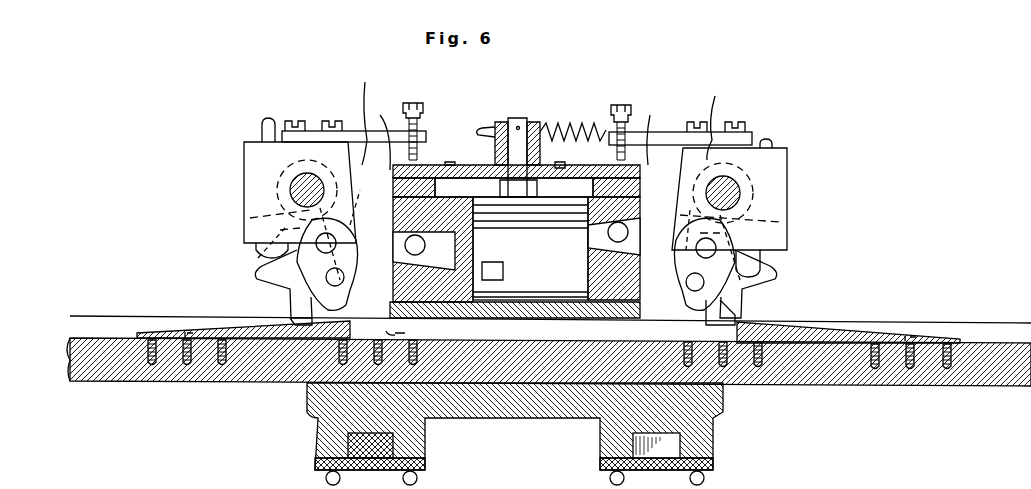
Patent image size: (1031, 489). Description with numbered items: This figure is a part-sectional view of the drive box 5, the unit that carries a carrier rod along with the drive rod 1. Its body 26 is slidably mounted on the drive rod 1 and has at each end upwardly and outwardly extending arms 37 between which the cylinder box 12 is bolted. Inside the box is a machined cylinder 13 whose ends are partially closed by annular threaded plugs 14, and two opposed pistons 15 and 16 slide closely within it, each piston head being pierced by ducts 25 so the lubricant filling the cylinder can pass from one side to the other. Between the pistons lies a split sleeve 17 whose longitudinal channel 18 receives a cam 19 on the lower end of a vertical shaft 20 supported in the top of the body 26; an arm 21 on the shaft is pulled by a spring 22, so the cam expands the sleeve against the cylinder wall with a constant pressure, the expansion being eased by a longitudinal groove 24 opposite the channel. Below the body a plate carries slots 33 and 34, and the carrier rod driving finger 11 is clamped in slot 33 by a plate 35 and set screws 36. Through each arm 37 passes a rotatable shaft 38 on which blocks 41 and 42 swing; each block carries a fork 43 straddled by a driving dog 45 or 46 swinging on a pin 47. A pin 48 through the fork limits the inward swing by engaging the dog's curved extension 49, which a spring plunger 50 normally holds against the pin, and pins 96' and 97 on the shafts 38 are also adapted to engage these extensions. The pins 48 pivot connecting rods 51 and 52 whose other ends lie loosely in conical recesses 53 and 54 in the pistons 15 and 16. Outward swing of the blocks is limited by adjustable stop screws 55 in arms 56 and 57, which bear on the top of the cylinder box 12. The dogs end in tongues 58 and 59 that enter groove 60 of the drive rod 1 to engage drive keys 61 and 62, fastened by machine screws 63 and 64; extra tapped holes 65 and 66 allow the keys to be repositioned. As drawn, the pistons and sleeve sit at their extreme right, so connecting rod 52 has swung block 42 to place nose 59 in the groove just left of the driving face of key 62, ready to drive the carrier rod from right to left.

The drive rod 1 is at (83, 381).
The drive box 5 is at (471, 152).
The carrier rod driving finger 11 is at (395, 445).
The cylinder box 12 is at (437, 167).
The cylinder 13 is at (525, 270).
The annular threaded plugs 14 is at (519, 134).
The piston 15 is at (410, 205).
The piston 16 is at (628, 196).
The sleeve 17 is at (566, 215).
The channel 18 is at (490, 200).
The cam 19 is at (510, 205).
The shaft 20 is at (519, 125).
The arm 21 is at (487, 128).
The spring 22 is at (575, 124).
The longitudinal groove 24 is at (545, 215).
The ducts 25 is at (578, 160).
The body 26 is at (330, 418).
The slot 33 is at (345, 448).
The slot 34 is at (636, 448).
The plate 35 is at (318, 462).
The set screws 36 is at (706, 477).
The arms 37 is at (547, 115).
The rotatable shaft 38 is at (292, 190).
The block 41 is at (256, 152).
The block 42 is at (780, 160).
The fork 43 is at (398, 306).
The driving dog 45 is at (260, 268).
The driving dog 46 is at (772, 290).
The pin 47 is at (325, 283).
The pin 48 is at (345, 276).
The curved extensions 49 is at (352, 236).
The spring plunger 50 is at (256, 250).
The connecting rod 51 is at (338, 250).
The connecting rod 52 is at (628, 234).
The conical recess 53 is at (416, 231).
The conical recess 54 is at (632, 220).
The adjustable stop screws 55 is at (412, 103).
The arm 56 is at (352, 134).
The arm 57 is at (673, 137).
The tongue 58 is at (294, 307).
The tongue 59 is at (706, 322).
The groove 60 is at (114, 320).
The drive key 61 is at (226, 331).
The drive key 62 is at (858, 330).
The machine screws 63 is at (190, 333).
The machine screws 64 is at (392, 333).
The tapped holes 65 is at (162, 355).
The tapped holes 66 is at (306, 384).
The pin 96' is at (274, 235).
The pin 97 is at (785, 222).